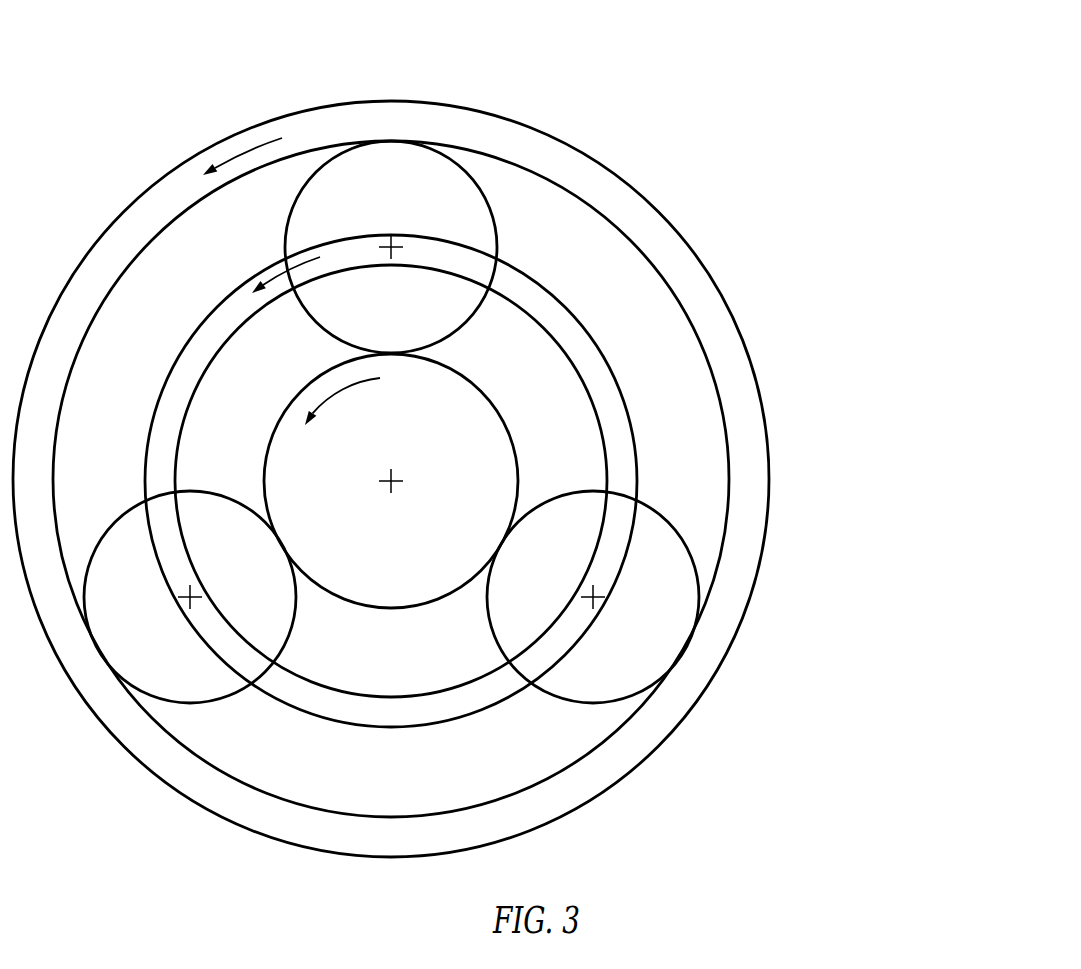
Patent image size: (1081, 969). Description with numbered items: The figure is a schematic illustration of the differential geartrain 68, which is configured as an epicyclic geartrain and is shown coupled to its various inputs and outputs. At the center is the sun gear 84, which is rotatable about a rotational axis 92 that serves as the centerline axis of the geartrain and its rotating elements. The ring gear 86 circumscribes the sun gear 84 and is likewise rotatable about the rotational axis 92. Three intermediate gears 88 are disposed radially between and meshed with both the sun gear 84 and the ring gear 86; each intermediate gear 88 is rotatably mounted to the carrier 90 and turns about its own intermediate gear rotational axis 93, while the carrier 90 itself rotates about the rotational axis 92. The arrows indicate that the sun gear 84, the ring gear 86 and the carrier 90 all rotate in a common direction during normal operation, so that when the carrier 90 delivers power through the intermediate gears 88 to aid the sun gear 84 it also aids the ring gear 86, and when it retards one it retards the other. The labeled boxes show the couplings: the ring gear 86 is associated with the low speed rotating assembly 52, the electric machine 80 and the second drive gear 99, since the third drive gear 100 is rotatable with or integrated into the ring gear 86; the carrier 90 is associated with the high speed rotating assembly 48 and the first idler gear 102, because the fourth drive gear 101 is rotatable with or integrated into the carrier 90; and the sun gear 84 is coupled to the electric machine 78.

The differential geartrain 68 is at (536, 434).
The low speed rotating assembly 52 is at (536, 479).
The electric machine 80 is at (536, 479).
The second drive gear 99 is at (1035, 271).
The ring gear 86 is at (391, 479).
The third drive gear 100 is at (138, 195).
The high speed rotating assembly 48 is at (602, 481).
The first idler gear 102 is at (638, 478).
The carrier 90 is at (421, 481).
The fourth drive gear 101 is at (585, 318).
The electric machine 78 is at (1001, 742).
The sun gear 84 is at (486, 397).
The rotational axis 92 is at (396, 478).
The intermediate gears 88 is at (290, 213).
The intermediate gear rotational axis 93 is at (391, 247).